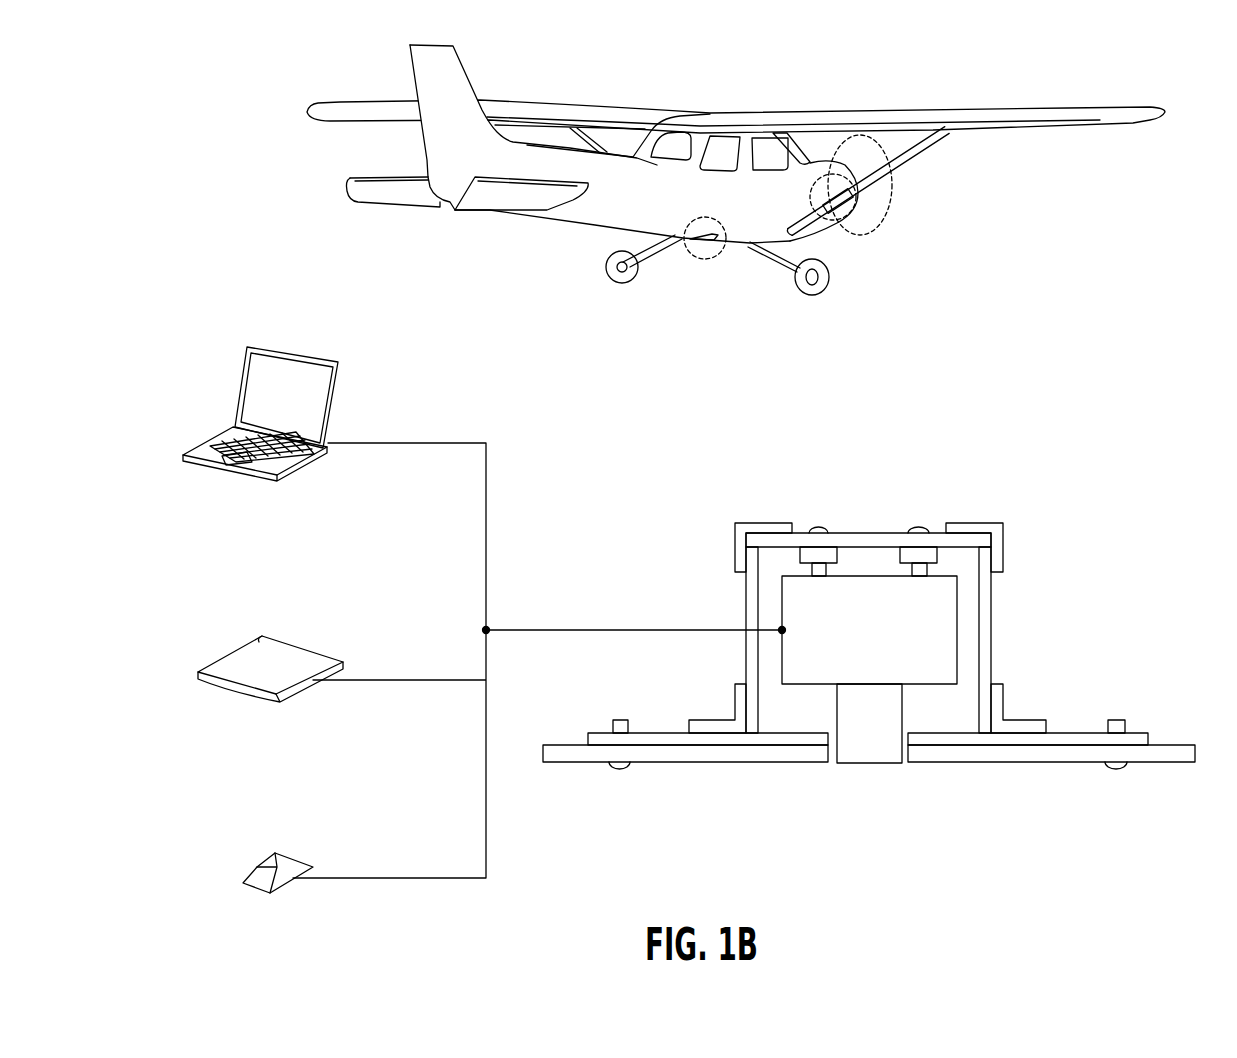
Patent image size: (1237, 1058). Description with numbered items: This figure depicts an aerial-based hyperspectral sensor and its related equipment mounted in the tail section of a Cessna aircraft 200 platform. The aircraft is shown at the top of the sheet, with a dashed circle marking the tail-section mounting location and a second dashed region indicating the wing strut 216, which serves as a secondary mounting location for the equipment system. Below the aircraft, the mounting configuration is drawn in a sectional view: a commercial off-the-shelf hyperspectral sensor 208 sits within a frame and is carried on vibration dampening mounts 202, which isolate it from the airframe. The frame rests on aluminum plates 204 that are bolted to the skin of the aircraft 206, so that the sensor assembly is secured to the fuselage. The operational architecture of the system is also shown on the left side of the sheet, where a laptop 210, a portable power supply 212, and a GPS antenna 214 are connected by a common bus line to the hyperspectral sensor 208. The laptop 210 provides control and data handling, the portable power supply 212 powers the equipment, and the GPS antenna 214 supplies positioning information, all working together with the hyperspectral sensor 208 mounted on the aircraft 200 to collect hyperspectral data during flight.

The Cessna aircraft 200 is at (705, 258).
The wing strut 216 is at (860, 218).
The laptop 210 is at (337, 402).
The portable power supply 212 is at (343, 662).
The GPS antenna 214 is at (313, 867).
The vibration dampening mounts 202 is at (838, 557).
The aluminum plates 204 is at (1143, 732).
The skin of the aircraft 206 is at (998, 763).
The hyperspectral sensor 208 is at (957, 615).